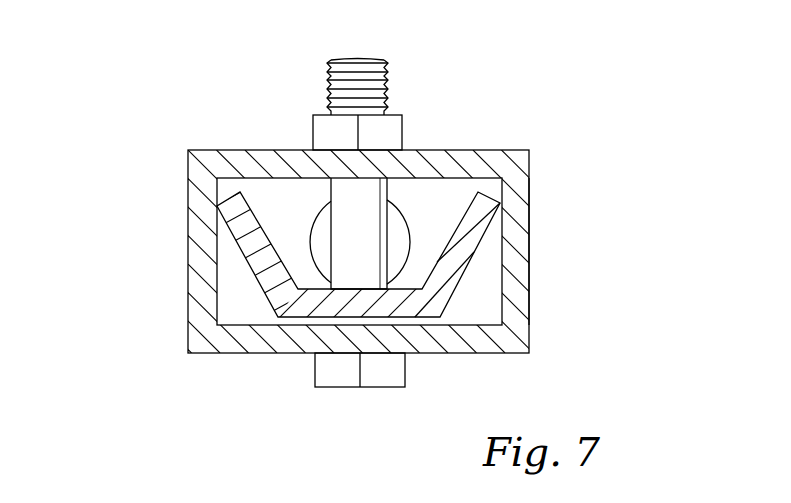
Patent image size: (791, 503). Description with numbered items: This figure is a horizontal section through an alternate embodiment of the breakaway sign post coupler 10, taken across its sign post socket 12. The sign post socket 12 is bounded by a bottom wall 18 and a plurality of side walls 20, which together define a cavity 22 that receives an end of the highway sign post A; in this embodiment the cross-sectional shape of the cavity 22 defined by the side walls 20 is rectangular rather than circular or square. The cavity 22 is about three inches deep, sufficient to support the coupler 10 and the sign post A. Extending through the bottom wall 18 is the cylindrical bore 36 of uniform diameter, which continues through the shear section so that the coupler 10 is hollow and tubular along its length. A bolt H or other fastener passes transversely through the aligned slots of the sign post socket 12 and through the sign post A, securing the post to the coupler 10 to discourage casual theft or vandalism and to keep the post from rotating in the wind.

The sign post coupler 10 is at (570, 170).
The sign post socket 12 is at (187, 220).
The bottom wall 18 is at (255, 312).
The side walls 20 is at (529, 242).
The cavity 22 is at (282, 210).
The cylindrical bore 36 is at (401, 212).
The sign post A is at (470, 263).
The bolt H is at (315, 371).